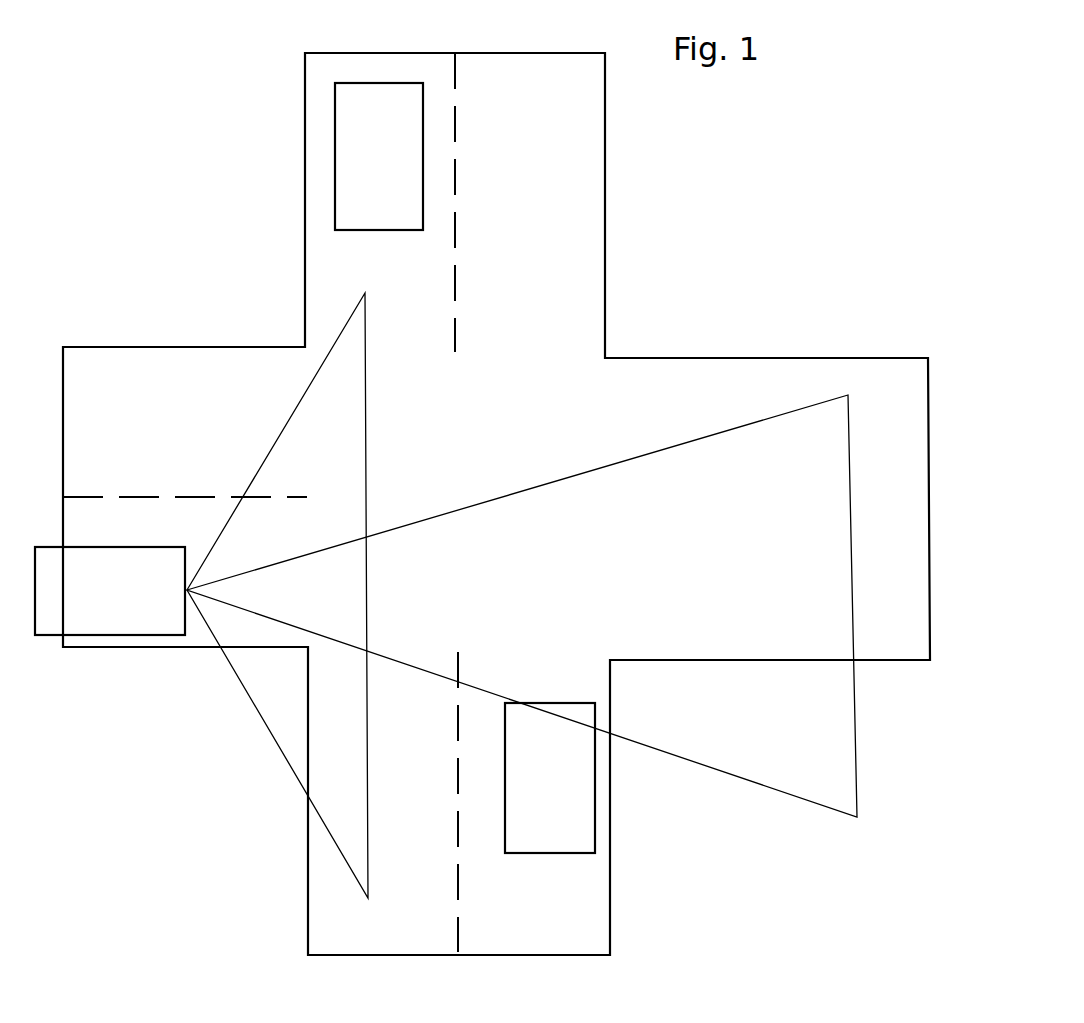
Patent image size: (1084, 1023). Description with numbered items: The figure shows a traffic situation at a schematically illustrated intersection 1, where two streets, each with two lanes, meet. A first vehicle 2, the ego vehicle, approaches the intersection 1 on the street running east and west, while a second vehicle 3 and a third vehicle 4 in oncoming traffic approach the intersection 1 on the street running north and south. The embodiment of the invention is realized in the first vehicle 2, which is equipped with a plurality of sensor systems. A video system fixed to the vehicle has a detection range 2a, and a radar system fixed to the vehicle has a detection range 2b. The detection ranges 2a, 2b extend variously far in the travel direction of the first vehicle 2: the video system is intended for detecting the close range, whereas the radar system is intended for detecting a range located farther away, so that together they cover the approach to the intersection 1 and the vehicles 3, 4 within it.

The intersection 1 is at (696, 272).
The first vehicle 2 is at (110, 617).
The detection range 2a is at (305, 420).
The detection range 2b is at (795, 757).
The second vehicle 3 is at (357, 137).
The third vehicle 4 is at (570, 833).